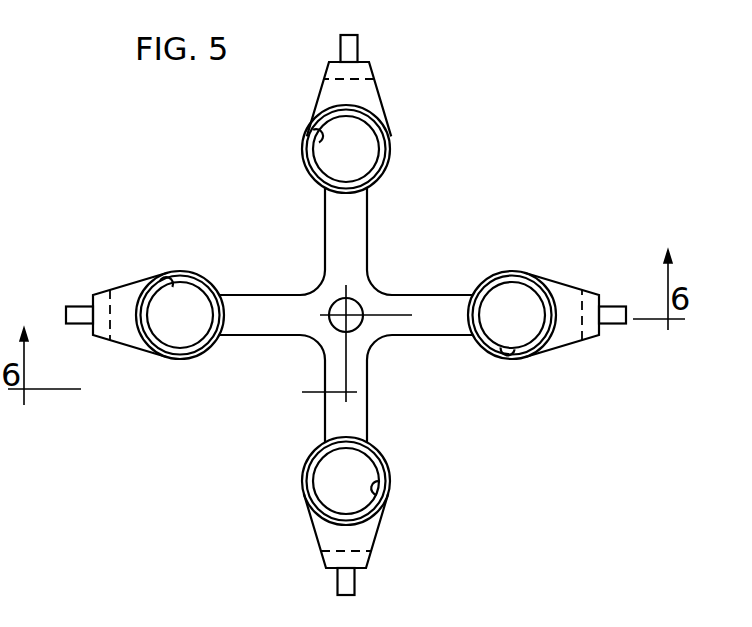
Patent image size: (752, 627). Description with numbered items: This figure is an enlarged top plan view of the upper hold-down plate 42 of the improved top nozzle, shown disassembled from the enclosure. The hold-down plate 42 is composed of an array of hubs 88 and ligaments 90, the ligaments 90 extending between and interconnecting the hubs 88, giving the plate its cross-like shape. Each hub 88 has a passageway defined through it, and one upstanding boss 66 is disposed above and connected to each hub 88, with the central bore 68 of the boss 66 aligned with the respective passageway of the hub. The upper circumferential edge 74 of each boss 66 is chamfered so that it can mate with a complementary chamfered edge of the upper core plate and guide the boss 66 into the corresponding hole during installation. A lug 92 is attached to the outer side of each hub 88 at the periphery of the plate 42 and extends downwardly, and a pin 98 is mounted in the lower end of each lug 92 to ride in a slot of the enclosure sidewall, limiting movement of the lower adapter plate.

The upper hold-down plate 42 is at (424, 240).
The boss 66 is at (384, 178).
The central bore 68 is at (320, 137).
The upper circumferential edge 74 is at (388, 150).
The hub 88 is at (311, 156).
The ligament 90 is at (367, 243).
The lug 92 is at (365, 70).
The pin 98 is at (341, 42).